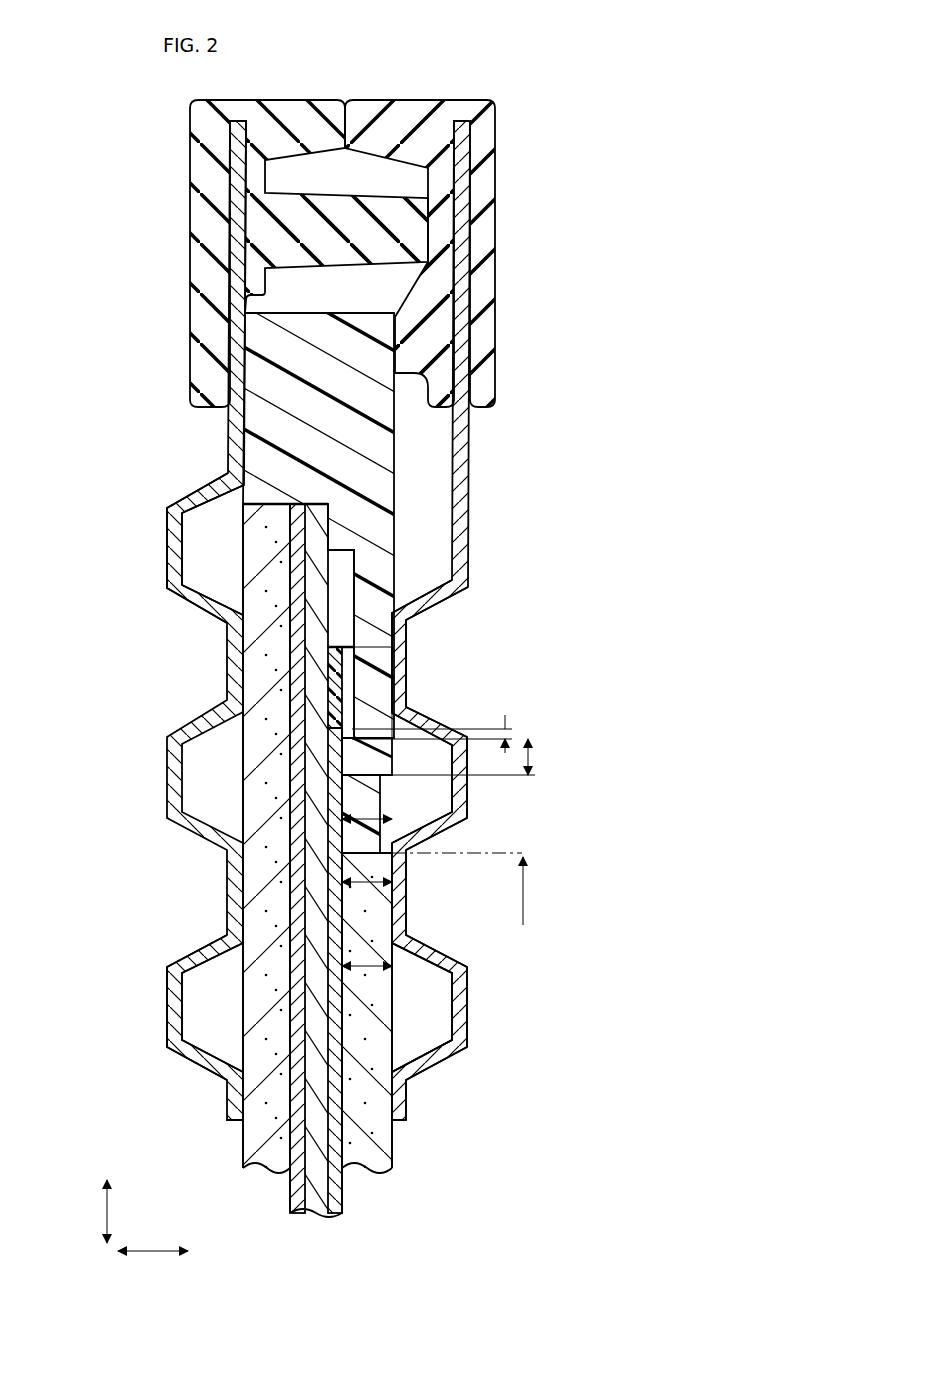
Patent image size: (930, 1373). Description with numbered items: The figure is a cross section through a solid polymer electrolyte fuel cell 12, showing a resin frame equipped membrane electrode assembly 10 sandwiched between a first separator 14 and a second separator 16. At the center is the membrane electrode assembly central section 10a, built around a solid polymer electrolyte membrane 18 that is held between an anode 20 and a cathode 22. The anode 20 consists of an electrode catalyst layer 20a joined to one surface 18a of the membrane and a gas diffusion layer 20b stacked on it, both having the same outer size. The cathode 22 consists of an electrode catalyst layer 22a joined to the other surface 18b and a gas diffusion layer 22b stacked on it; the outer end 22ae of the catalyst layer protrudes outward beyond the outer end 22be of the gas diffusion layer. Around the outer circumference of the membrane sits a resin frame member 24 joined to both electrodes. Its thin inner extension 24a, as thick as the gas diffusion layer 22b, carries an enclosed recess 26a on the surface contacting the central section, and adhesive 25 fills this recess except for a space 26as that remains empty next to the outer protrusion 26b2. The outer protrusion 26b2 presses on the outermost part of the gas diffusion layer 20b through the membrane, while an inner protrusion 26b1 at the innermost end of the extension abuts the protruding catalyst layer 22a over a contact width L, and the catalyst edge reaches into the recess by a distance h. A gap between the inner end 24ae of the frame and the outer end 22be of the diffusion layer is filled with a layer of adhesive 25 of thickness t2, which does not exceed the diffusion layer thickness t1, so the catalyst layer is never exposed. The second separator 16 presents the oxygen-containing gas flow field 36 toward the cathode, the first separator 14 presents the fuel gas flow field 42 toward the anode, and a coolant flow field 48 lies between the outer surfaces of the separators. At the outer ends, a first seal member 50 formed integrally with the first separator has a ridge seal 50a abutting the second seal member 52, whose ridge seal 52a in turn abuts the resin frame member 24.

The solid polymer electrolyte fuel cell 12 is at (455, 68).
The first seal member 50 is at (185, 126).
The ridge seal 50a is at (400, 234).
The second seal member 52 is at (500, 130).
The ridge seal 52a is at (413, 352).
The first separator 14 is at (190, 722).
The coolant flow field 48 is at (213, 652).
The fuel gas flow field 42 is at (207, 968).
The resin frame member 24 is at (397, 310).
The inner extension 24a is at (372, 650).
The inner end 24ae is at (395, 778).
The second separator 16 is at (470, 983).
The oxygen-containing gas flow field 36 is at (412, 962).
The membrane electrode assembly central section 10a is at (395, 1040).
The resin frame equipped membrane electrode assembly 10 is at (418, 490).
The outer protrusion 26b2 is at (340, 537).
The space 26as is at (345, 583).
The recess 26a is at (352, 625).
The adhesive 25 is at (378, 692).
The outer end of the electrode catalyst layer 22ae is at (337, 724).
The inner protrusion 26b1 is at (362, 756).
The outer end of the gas diffusion layer 22be is at (383, 836).
The anode 20 is at (142, 1093).
The electrode catalyst layer 20a is at (247, 1110).
The gas diffusion layer 20b is at (265, 1153).
The solid polymer electrolyte membrane 18 is at (318, 1218).
The one surface of the solid polymer electrolyte membrane 18a is at (292, 1200).
The other surface of the solid polymer electrolyte membrane 18b is at (333, 1190).
The cathode 22 is at (490, 1093).
The electrode catalyst layer 22a is at (345, 1105).
The gas diffusion layer 22b is at (378, 1150).